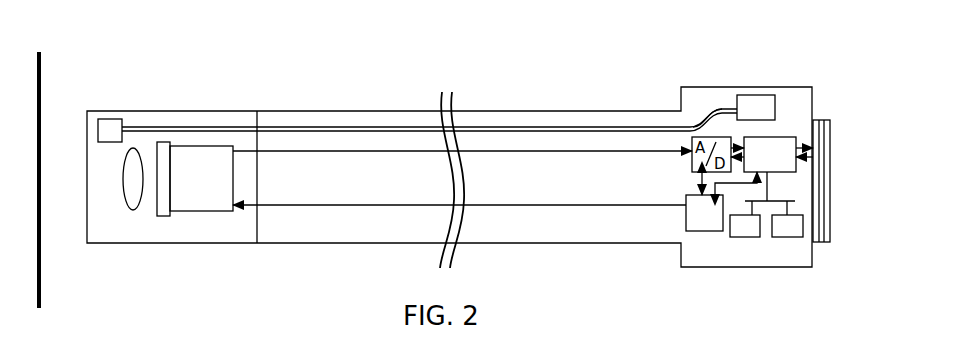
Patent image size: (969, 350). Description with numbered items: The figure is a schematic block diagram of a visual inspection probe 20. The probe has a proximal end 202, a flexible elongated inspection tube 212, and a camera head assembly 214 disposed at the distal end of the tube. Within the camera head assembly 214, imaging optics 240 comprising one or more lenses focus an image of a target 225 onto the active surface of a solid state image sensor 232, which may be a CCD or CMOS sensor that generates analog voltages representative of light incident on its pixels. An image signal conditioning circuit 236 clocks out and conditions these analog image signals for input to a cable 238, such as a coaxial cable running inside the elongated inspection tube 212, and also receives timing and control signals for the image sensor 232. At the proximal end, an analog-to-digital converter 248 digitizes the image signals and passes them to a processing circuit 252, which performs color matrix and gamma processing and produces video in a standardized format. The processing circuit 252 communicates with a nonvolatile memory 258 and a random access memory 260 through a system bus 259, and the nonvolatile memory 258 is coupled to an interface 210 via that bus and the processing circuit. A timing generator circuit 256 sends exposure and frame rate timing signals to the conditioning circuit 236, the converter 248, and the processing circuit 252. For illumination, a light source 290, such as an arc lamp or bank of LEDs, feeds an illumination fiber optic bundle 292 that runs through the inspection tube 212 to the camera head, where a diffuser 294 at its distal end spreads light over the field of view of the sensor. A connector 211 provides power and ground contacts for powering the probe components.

The visual inspection probe 20 is at (607, 67).
The proximal end 202 is at (758, 268).
The interface 210 is at (817, 120).
The connector 211 is at (824, 242).
The elongated inspection tube 212 is at (538, 110).
The camera head assembly 214 is at (198, 110).
The target 225 is at (42, 89).
The solid state image sensor 232 is at (157, 153).
The image signal conditioning circuit 236 is at (190, 212).
The cable 238 is at (293, 150).
The imaging optics 240 is at (133, 188).
The analog-to-digital converter 248 is at (718, 135).
The processing circuit 252 is at (764, 166).
The timing generator circuit 256 is at (704, 201).
The nonvolatile memory 258 is at (745, 219).
The system bus 259 is at (777, 201).
The random access memory 260 is at (787, 219).
The light source 290 is at (756, 95).
The illumination fiber optic bundle 292 is at (363, 127).
The diffuser 294 is at (98, 124).